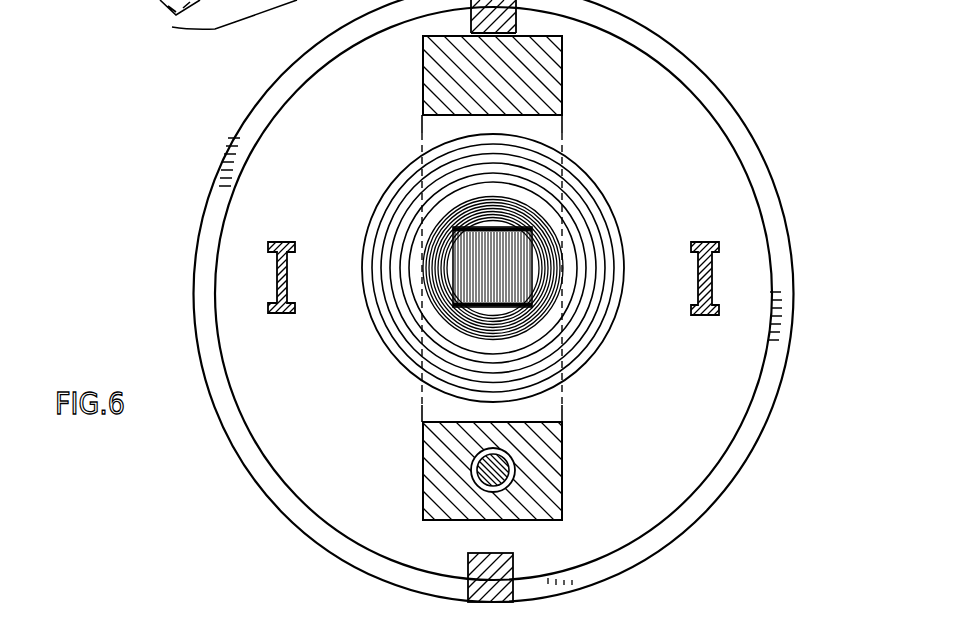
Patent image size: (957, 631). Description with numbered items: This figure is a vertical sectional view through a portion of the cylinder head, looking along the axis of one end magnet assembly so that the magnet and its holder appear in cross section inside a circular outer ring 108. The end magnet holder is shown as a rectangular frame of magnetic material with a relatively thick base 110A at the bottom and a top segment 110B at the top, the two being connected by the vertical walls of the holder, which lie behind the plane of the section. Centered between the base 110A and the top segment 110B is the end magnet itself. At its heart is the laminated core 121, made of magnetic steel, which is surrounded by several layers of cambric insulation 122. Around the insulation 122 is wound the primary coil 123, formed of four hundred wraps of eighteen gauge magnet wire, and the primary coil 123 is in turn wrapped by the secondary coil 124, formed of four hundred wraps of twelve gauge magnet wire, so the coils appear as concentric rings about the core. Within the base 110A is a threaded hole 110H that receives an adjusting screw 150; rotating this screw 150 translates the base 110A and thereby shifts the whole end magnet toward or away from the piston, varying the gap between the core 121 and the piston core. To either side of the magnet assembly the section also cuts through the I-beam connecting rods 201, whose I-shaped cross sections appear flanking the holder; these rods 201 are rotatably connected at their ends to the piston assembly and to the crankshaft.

The housing ring 108 is at (688, 61).
The top segment 110B is at (547, 90).
The base 110A is at (562, 471).
The threaded hole 110H is at (510, 453).
The adjusting screw 150 is at (497, 474).
The secondary coil 124 is at (575, 173).
The primary coil 123 is at (563, 249).
The cambric insulation 122 is at (538, 275).
The core 121 is at (515, 287).
The I-beam connecting rods 201 is at (285, 273).